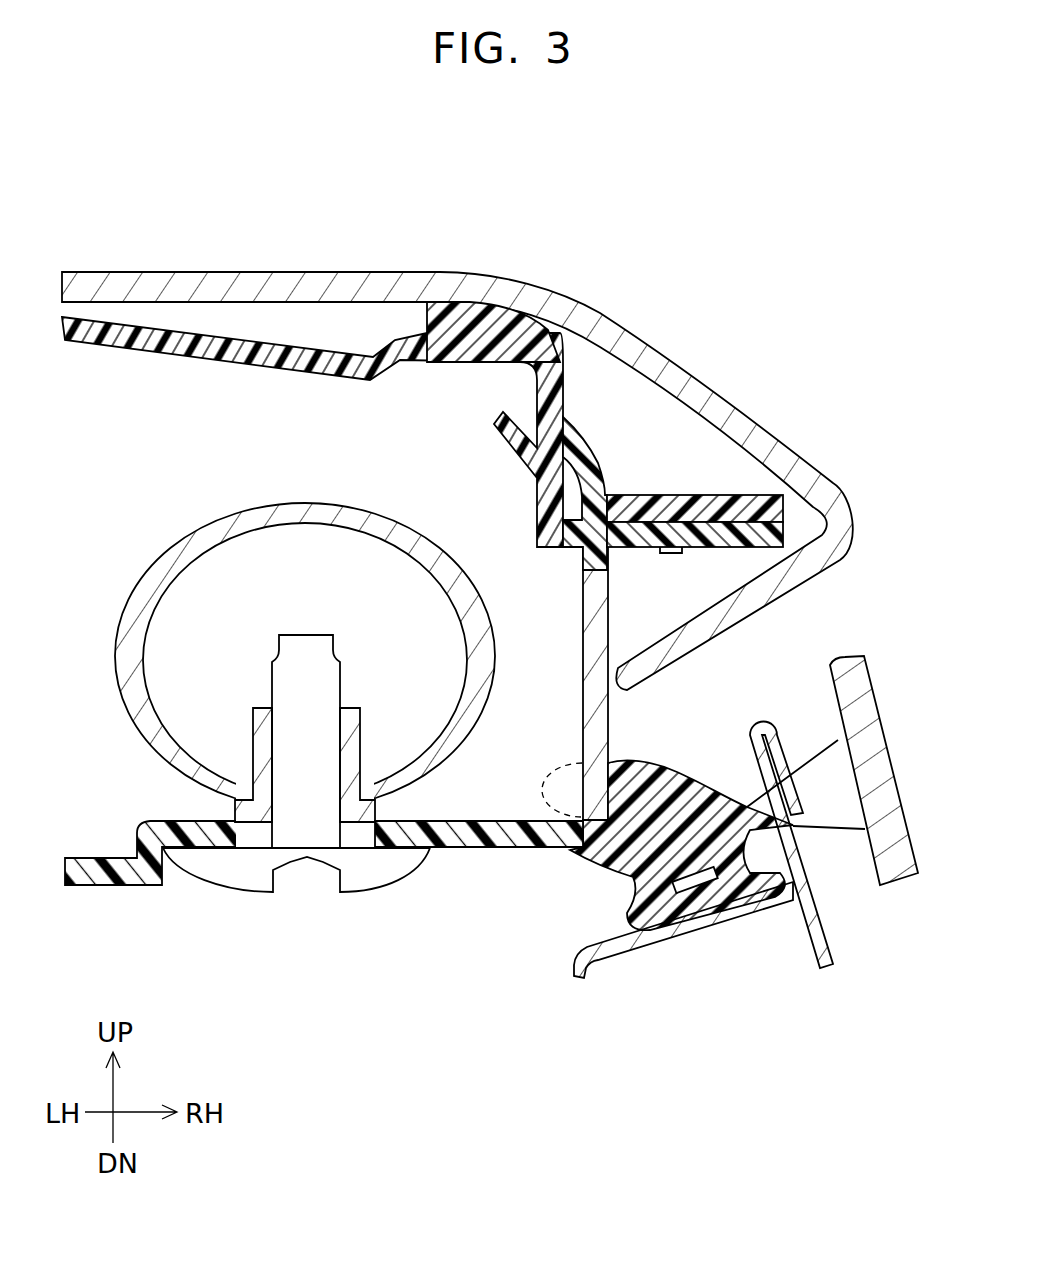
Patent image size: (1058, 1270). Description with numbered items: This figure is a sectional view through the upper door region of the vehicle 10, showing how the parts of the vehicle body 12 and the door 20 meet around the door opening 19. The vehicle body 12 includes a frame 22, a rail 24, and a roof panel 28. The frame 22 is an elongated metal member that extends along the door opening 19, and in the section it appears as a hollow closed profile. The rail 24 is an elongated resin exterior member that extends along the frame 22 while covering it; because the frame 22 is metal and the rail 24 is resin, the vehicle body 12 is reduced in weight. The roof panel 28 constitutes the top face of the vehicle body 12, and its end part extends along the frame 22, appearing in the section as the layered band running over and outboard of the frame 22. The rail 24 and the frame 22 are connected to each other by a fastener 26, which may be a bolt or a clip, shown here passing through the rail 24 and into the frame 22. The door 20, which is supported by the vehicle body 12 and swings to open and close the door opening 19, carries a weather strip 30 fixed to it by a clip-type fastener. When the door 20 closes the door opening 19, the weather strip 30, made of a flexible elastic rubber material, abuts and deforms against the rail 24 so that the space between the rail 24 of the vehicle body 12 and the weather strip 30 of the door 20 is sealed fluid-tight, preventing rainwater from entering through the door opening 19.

The vehicle 10 is at (730, 192).
The vehicle body 12 is at (117, 218).
The door opening 19 is at (687, 710).
The door 20 is at (900, 828).
The frame 22 is at (170, 555).
The rail 24 is at (102, 877).
The fastener 26 is at (240, 877).
The roof panel 28 is at (300, 272).
The weather strip 30 is at (657, 907).